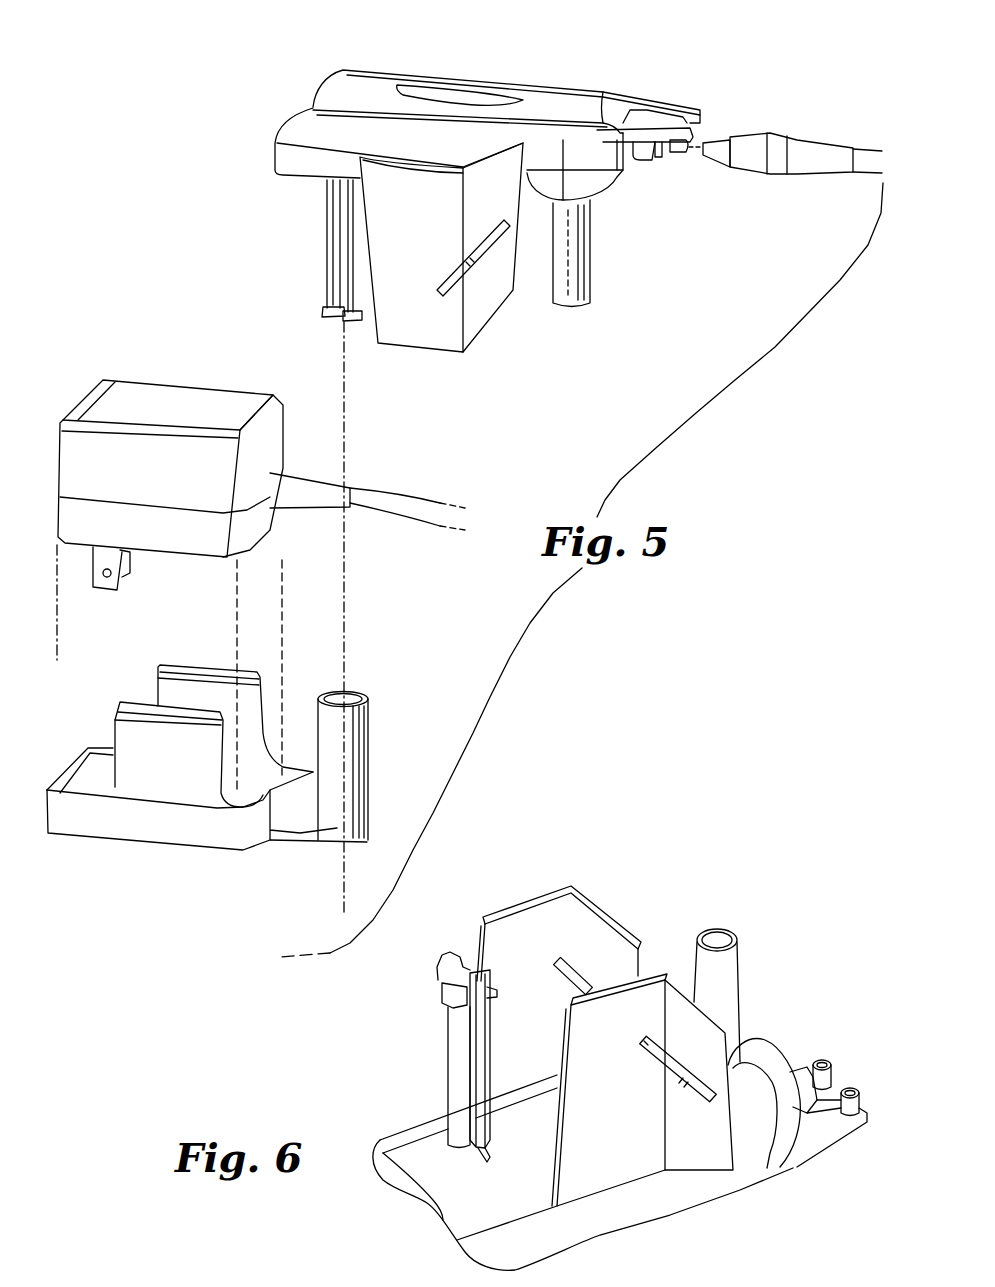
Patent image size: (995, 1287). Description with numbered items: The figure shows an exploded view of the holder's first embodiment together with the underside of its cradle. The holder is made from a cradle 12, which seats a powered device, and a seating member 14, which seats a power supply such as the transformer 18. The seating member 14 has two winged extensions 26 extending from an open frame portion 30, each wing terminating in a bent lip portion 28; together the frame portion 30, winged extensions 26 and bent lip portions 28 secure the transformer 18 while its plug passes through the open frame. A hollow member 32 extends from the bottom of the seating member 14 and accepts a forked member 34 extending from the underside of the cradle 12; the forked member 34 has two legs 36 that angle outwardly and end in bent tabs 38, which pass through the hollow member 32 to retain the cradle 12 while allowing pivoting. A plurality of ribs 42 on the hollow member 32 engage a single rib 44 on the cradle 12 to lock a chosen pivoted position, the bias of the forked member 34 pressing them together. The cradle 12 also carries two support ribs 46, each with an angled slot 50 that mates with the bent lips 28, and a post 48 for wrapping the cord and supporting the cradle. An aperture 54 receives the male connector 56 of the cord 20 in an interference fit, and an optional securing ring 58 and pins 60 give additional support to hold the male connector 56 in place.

In FIG. 5, the cradle 12 is at (570, 67).
In FIG. 6, the cradle 12 is at (656, 903).
In FIG. 5, the seating member 14 is at (145, 856).
In FIG. 5, the transformer 18 is at (172, 488).
In FIG. 5, the cord 20 is at (862, 150).
In FIG. 5, the winged extensions 26 is at (165, 688).
In FIG. 5, the bent lip portion 28 is at (192, 670).
In FIG. 5, the frame portion 30 is at (113, 817).
In FIG. 5, the hollow member 32 is at (343, 753).
In FIG. 5, the forked member 34 is at (321, 238).
In FIG. 6, the forked member 34 is at (444, 1081).
In FIG. 5, the legs 36 is at (328, 280).
In FIG. 6, the legs 36 is at (448, 1040).
In FIG. 5, the bent tab 38 is at (362, 323).
In FIG. 6, the bent tab 38 is at (485, 951).
In FIG. 5, the ribs 42 is at (363, 693).
In FIG. 6, the single rib 44 is at (480, 1153).
In FIG. 5, the support ribs 46 is at (443, 323).
In FIG. 6, the support ribs 46 is at (524, 933).
In FIG. 5, the post 48 is at (568, 305).
In FIG. 6, the post 48 is at (730, 965).
In FIG. 5, the slot 50 is at (475, 265).
In FIG. 6, the slot 50 is at (571, 970).
In FIG. 5, the aperture 54 is at (658, 147).
In FIG. 5, the male connector 56 is at (758, 132).
In FIG. 5, the securing ring 58 is at (641, 150).
In FIG. 6, the securing ring 58 is at (797, 1070).
In FIG. 6, the pins 60 is at (843, 1084).